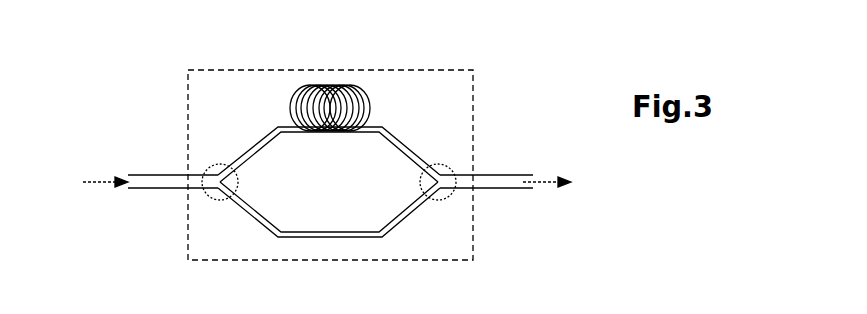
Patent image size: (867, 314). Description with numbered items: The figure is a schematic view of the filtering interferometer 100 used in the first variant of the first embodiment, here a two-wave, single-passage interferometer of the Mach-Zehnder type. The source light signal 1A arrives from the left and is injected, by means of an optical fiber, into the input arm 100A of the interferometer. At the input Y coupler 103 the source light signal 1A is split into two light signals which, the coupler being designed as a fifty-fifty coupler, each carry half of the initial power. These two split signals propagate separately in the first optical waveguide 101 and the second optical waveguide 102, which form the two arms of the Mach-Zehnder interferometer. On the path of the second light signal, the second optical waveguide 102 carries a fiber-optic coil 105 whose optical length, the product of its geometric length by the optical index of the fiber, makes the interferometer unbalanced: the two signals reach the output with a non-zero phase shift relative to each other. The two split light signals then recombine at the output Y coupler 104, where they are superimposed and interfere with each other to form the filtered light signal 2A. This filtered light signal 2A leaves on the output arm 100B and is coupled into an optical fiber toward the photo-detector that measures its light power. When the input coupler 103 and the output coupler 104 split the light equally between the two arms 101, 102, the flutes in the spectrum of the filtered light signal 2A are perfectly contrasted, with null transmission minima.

The filtering interferometer 100 is at (474, 110).
The input arm 100A is at (162, 175).
The output arm 100B is at (500, 189).
The first optical waveguide 101 is at (338, 238).
The second optical waveguide 102 is at (250, 144).
The input Y coupler 103 is at (220, 201).
The output Y coupler 104 is at (438, 201).
The fiber-optic coil 105 is at (370, 107).
The source light signal 1A is at (101, 176).
The filtered light signal 2A is at (543, 168).